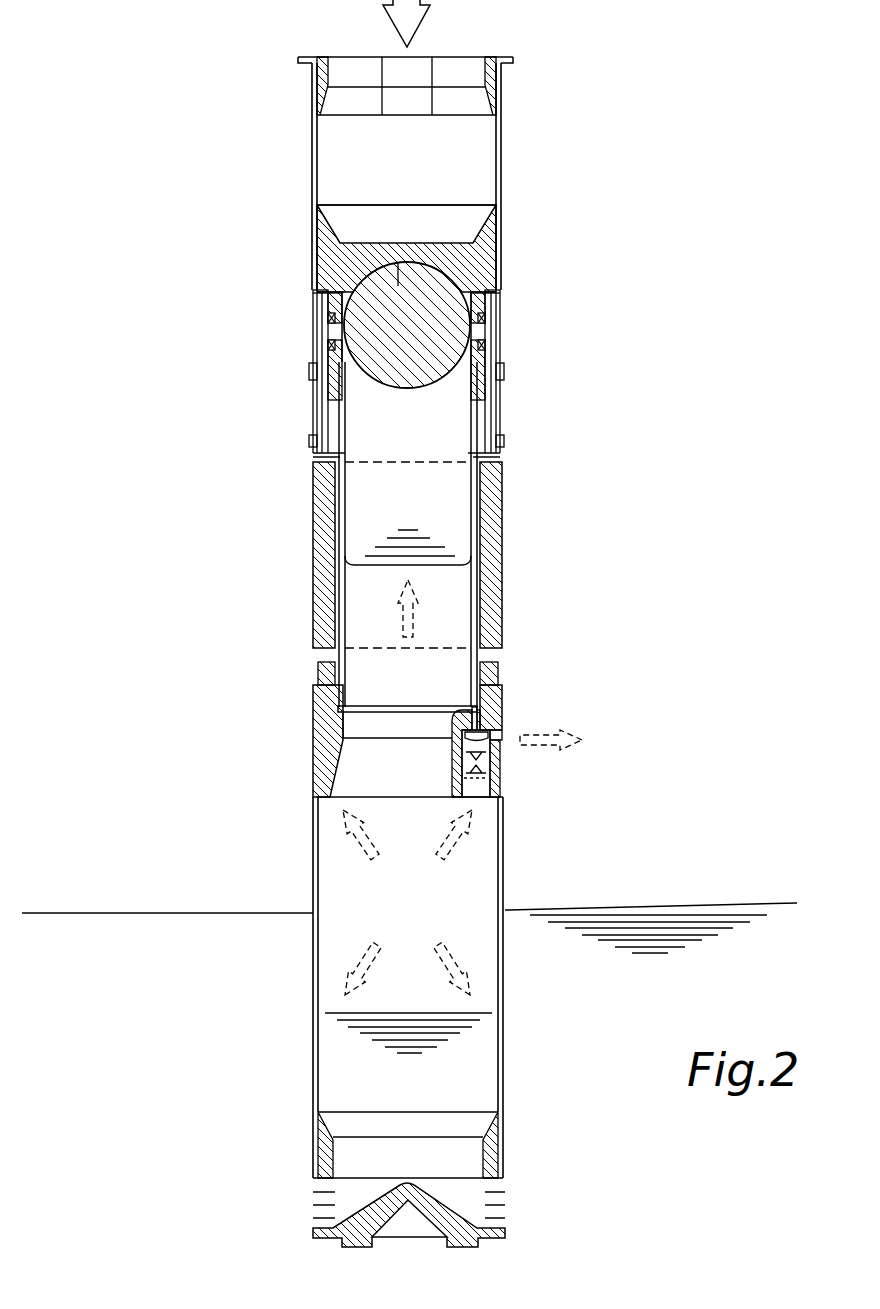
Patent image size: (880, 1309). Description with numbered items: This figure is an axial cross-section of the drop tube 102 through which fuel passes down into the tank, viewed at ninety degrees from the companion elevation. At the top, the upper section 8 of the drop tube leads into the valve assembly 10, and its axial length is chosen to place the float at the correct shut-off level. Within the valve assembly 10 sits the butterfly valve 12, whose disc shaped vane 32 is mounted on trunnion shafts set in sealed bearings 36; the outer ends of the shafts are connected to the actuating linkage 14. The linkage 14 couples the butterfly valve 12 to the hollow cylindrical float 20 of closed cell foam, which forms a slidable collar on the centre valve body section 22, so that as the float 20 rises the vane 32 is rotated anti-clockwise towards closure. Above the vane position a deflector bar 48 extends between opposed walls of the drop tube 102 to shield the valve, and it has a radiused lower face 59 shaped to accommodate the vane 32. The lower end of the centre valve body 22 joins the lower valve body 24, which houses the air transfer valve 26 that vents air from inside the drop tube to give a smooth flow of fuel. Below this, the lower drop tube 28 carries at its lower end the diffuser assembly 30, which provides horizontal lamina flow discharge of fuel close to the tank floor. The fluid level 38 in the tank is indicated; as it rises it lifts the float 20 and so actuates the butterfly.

The upper section of the drop tube 8 is at (313, 190).
The valve assembly 10 is at (477, 282).
The butterfly valve 12 is at (388, 380).
The actuating linkage 14 is at (313, 413).
The float 20 is at (498, 540).
The centre valve body section 22 is at (340, 602).
The lower valve body 24 is at (323, 727).
The air transfer valve 26 is at (497, 757).
The lower drop tube 28 is at (503, 867).
The diffuser assembly 30 is at (512, 1194).
The vane 32 is at (450, 352).
The sealed bearings 36 is at (330, 333).
The fluid level 38 is at (110, 912).
The deflector bar 48 is at (362, 258).
The radiused lower face 59 is at (398, 262).
The drop tube 102 is at (504, 161).